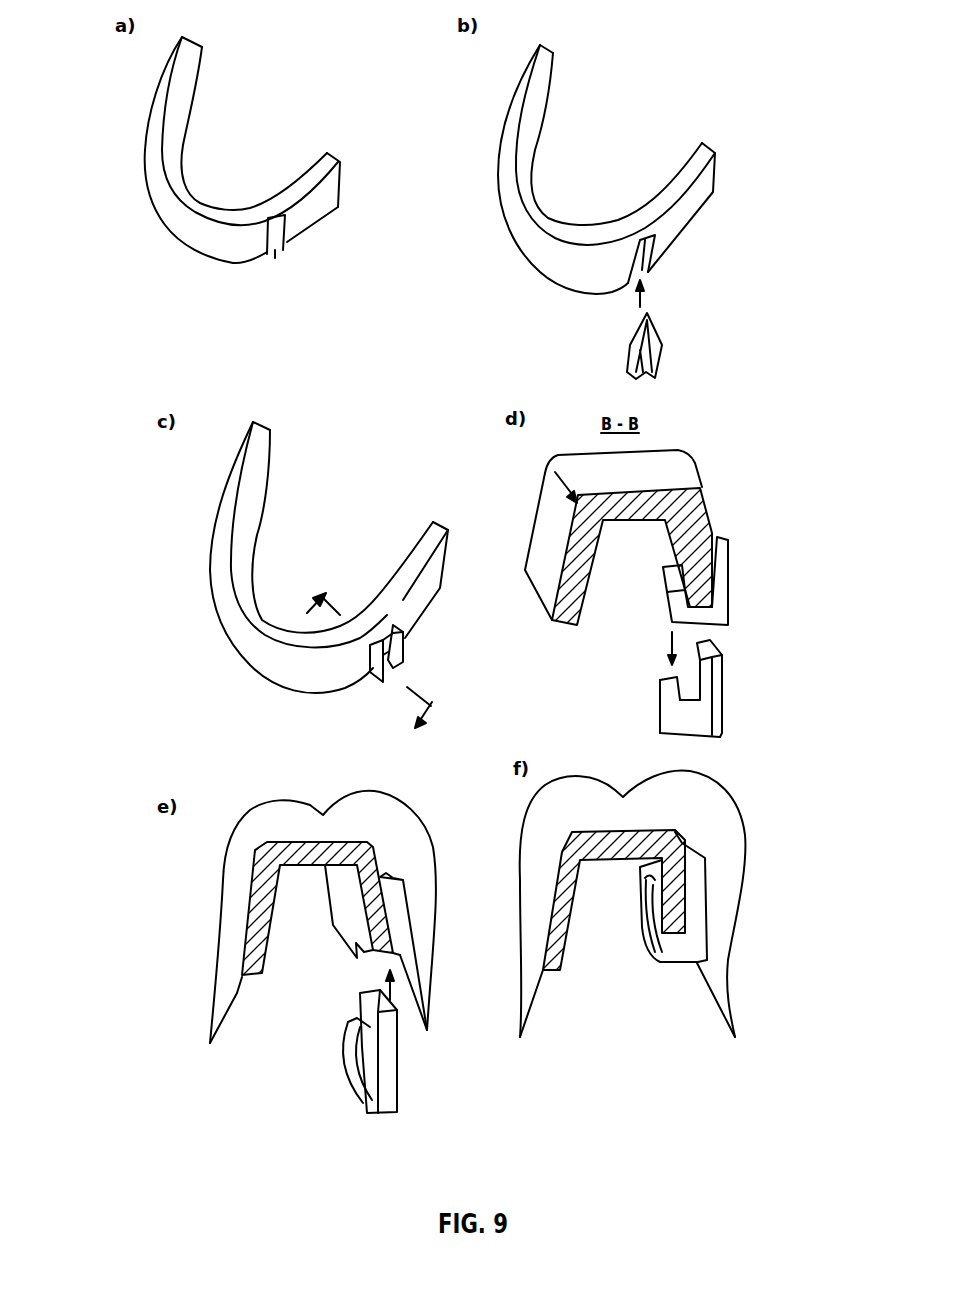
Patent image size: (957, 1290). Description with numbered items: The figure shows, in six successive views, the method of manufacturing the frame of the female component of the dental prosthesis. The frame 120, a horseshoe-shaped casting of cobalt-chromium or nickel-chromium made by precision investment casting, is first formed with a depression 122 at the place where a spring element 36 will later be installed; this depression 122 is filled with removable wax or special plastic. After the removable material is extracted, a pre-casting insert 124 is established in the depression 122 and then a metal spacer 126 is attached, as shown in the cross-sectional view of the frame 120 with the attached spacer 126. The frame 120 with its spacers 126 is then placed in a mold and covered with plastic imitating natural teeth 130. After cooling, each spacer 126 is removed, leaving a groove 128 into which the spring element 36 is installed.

The frame 120 is at (181, 176).
The depression 122 is at (277, 250).
The pre-casting insert 124 is at (660, 362).
The spacer 126 is at (733, 600).
The groove 128 is at (400, 925).
The natural teeth 130 is at (403, 827).
The spring element 36 is at (392, 1057).